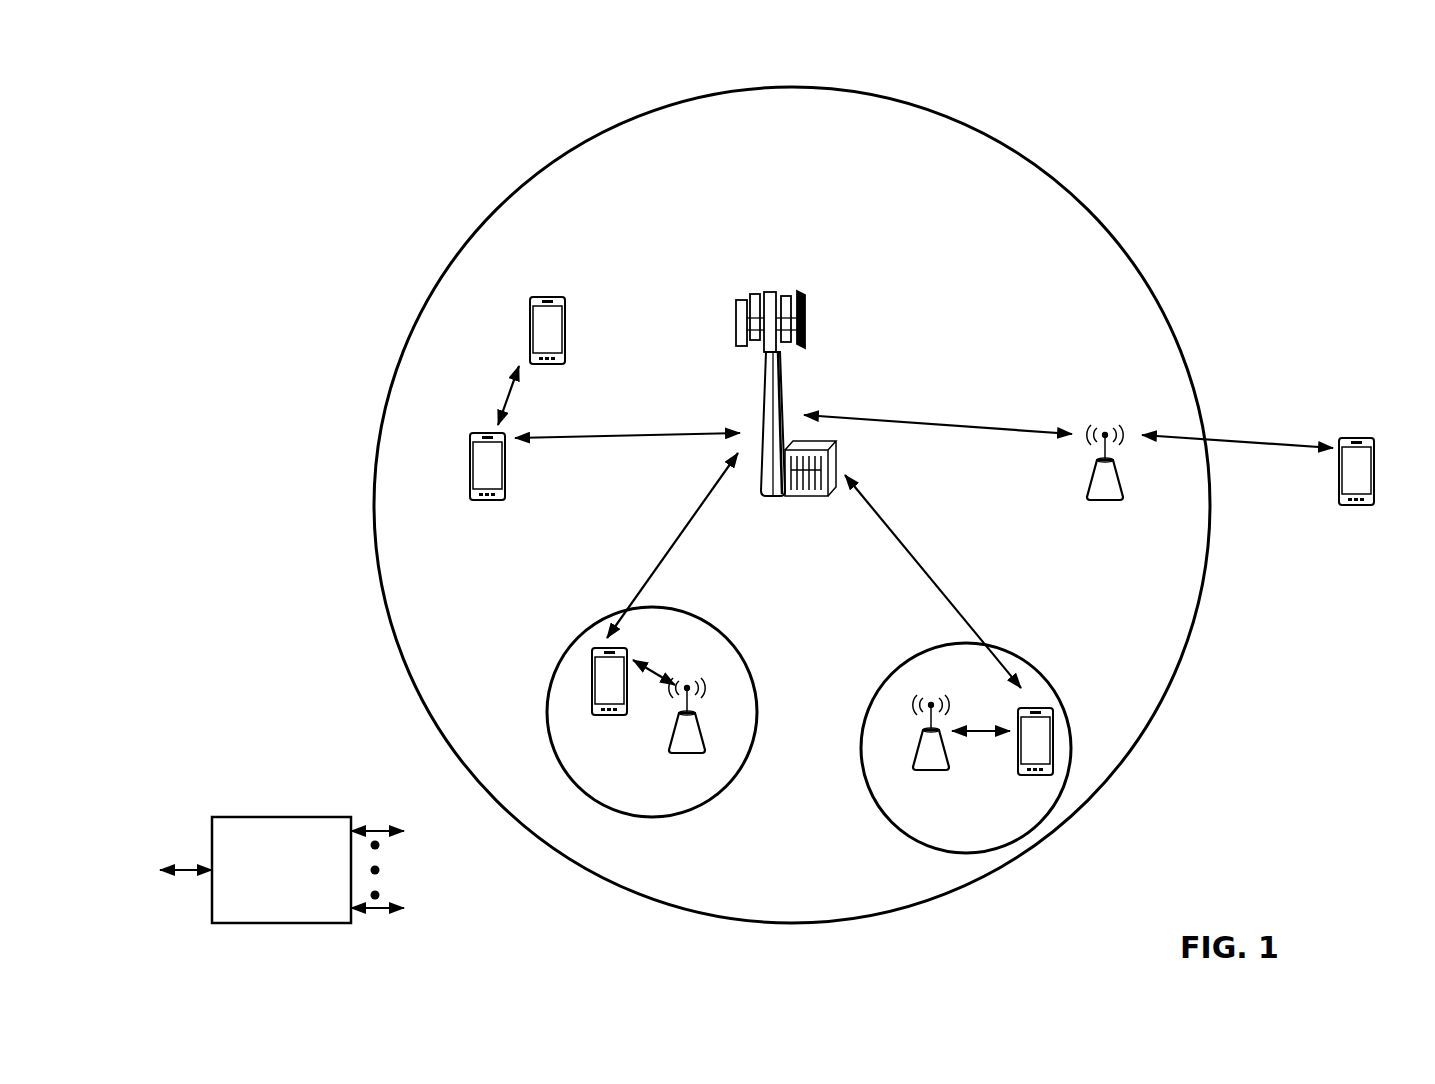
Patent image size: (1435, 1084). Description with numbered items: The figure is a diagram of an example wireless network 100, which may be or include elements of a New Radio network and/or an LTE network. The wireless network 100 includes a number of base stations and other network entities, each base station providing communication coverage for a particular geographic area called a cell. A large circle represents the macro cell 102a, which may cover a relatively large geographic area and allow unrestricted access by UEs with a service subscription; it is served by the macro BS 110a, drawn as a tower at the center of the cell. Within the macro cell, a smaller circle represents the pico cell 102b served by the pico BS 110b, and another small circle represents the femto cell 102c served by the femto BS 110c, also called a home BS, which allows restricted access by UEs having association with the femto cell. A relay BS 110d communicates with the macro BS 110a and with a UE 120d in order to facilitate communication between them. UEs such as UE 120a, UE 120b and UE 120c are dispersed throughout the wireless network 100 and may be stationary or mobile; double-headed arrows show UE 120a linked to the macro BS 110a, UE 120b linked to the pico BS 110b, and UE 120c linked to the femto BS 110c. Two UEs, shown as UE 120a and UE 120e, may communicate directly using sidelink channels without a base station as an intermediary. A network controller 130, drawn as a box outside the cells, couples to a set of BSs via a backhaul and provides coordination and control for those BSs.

The wireless network 100 is at (240, 64).
The macro cell 102a is at (1070, 192).
The pico cell 102b is at (748, 650).
The femto cell 102c is at (897, 656).
The macro BS 110a is at (782, 286).
The pico BS 110b is at (714, 750).
The femto BS 110c is at (912, 762).
The relay BS 110d is at (1107, 425).
The UE 120a is at (470, 464).
The UE 120b is at (600, 716).
The UE 120c is at (1024, 777).
The UE 120d is at (1368, 436).
The UE 120e is at (530, 315).
The network controller 130 is at (280, 815).